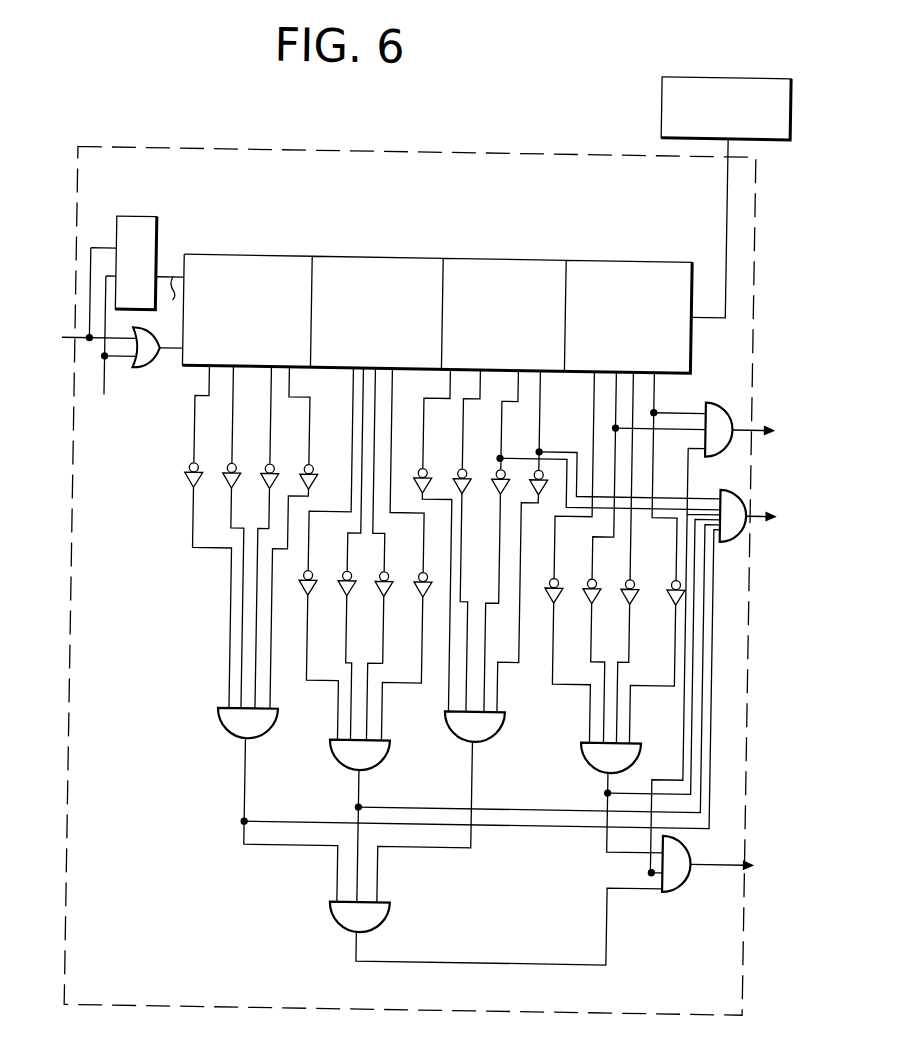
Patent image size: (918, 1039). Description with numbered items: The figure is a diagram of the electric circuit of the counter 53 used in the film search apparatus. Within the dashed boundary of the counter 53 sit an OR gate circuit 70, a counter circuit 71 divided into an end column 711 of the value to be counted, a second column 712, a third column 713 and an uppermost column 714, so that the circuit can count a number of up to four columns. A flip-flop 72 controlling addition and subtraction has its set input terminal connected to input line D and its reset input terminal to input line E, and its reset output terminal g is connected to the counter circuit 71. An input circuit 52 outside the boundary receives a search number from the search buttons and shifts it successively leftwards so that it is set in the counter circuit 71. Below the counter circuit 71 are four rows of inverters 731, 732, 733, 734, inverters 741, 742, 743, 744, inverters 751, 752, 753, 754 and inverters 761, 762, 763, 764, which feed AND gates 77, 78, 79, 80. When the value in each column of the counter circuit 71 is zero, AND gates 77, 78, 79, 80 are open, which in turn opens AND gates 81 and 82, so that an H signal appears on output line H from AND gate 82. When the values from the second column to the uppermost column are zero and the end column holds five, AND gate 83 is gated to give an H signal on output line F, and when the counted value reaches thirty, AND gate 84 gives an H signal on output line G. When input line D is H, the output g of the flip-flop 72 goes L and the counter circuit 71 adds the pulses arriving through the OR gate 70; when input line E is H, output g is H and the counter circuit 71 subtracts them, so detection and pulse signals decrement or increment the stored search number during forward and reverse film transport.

The input circuit 52 is at (655, 99).
The counter 53 is at (757, 271).
The OR gate circuit 70 is at (149, 371).
The counter circuit 71 is at (443, 185).
The flip-flop 72 is at (132, 220).
The AND gate 77 is at (228, 728).
The AND gate 78 is at (341, 769).
The AND gate 79 is at (509, 720).
The AND gate 80 is at (594, 771).
The AND gate 81 is at (337, 920).
The AND gate 82 is at (684, 889).
The AND gate 83 is at (711, 398).
The AND gate 84 is at (732, 485).
The end column 711 is at (603, 257).
The second column 712 is at (490, 257).
The third column 713 is at (348, 257).
The uppermost column 714 is at (260, 257).
The inverter 731 is at (198, 468).
The inverter 732 is at (236, 467).
The inverter 733 is at (274, 466).
The inverter 734 is at (313, 466).
The inverter 741 is at (308, 598).
The inverter 742 is at (346, 598).
The inverter 743 is at (383, 598).
The inverter 744 is at (422, 598).
The inverter 751 is at (426, 468).
The inverter 752 is at (465, 468).
The inverter 753 is at (504, 468).
The inverter 754 is at (543, 466).
The inverter 761 is at (553, 599).
The inverter 762 is at (590, 599).
The inverter 763 is at (629, 599).
The inverter 764 is at (674, 599).